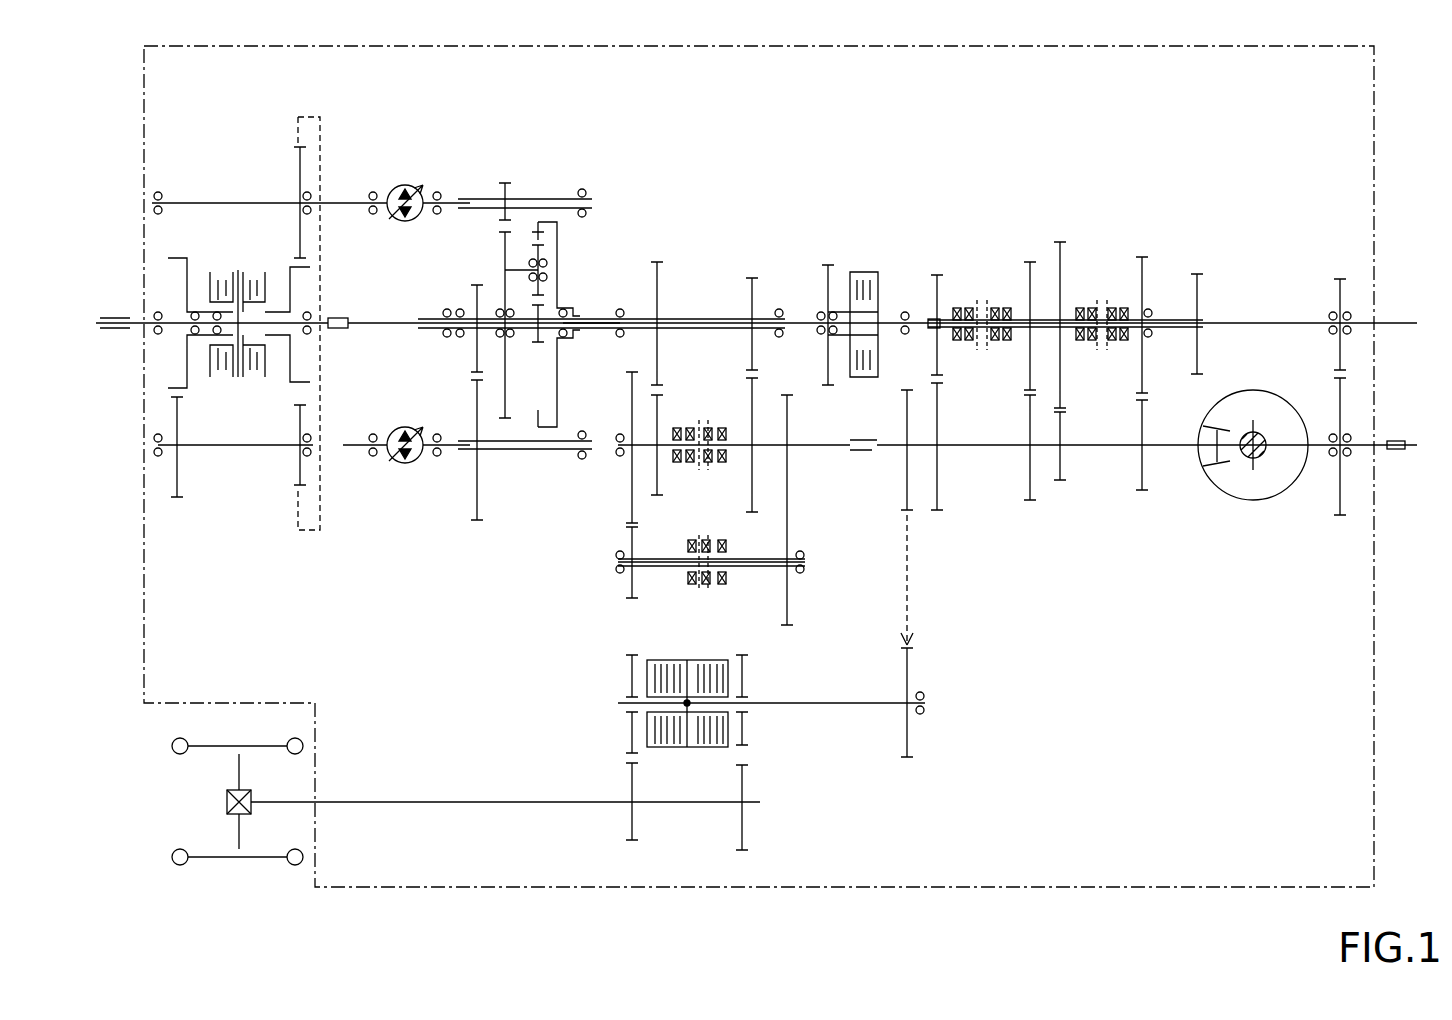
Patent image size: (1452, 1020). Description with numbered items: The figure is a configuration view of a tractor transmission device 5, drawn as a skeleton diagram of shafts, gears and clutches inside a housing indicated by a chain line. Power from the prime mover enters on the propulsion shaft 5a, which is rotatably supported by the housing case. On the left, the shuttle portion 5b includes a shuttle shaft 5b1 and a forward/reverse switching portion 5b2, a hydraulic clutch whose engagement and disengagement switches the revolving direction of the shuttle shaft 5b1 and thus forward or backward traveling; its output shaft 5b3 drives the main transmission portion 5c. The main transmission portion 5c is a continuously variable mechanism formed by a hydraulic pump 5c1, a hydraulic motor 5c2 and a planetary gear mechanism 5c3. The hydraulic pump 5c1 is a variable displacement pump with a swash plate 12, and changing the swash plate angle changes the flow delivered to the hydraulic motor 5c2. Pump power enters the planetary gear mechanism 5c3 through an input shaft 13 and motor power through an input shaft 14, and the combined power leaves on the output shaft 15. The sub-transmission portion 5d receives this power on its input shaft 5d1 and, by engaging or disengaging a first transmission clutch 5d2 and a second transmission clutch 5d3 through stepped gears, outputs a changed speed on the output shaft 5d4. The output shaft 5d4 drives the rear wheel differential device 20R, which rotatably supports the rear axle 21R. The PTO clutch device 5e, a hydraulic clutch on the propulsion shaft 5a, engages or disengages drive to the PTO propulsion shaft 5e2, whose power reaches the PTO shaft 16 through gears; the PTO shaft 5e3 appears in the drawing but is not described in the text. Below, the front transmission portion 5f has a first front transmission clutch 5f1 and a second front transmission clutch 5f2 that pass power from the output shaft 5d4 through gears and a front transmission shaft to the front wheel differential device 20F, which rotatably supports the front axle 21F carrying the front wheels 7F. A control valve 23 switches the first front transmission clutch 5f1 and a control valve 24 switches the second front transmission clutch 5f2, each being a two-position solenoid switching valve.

The transmission device 5 is at (1374, 115).
The propulsion shaft 5a is at (143, 320).
The shuttle portion 5b is at (225, 305).
The shuttle shaft 5b1 is at (172, 325).
The forward/reverse switching portion 5b2 is at (256, 258).
The output shaft 5b3 is at (322, 203).
The main transmission portion 5c is at (511, 313).
The hydraulic pump 5c1 is at (405, 185).
The hydraulic motor 5c2 is at (418, 462).
The planetary gear mechanism 5c3 is at (574, 248).
The sub-transmission portion 5d is at (1016, 427).
The input shaft 5d1 is at (705, 332).
The first transmission clutch 5d2 is at (771, 472).
The second transmission clutch 5d3 is at (740, 592).
The output shaft 5d4 is at (822, 442).
The PTO clutch device 5e is at (1012, 340).
The PTO propulsion shaft 5e2 is at (915, 320).
The sub speed change clutch 5e3 is at (1112, 280).
The front transmission portion 5f is at (746, 682).
The first front transmission clutch 5f1 is at (658, 681).
The second front transmission clutch 5f2 is at (687, 754).
The front wheels 7F is at (180, 738).
The swash plate 12 is at (418, 221).
The input shaft 13 is at (560, 197).
The input shaft 14 is at (520, 450).
The output shaft 15 is at (598, 330).
The PTO shaft 16 is at (1364, 447).
The front wheel differential device 20F is at (226, 800).
The rear wheel differential device 20R is at (1253, 468).
The front axle 21F is at (238, 838).
The rear axle 21R is at (1250, 432).
The control valve 23 is at (682, 680).
The control valve 24 is at (700, 728).